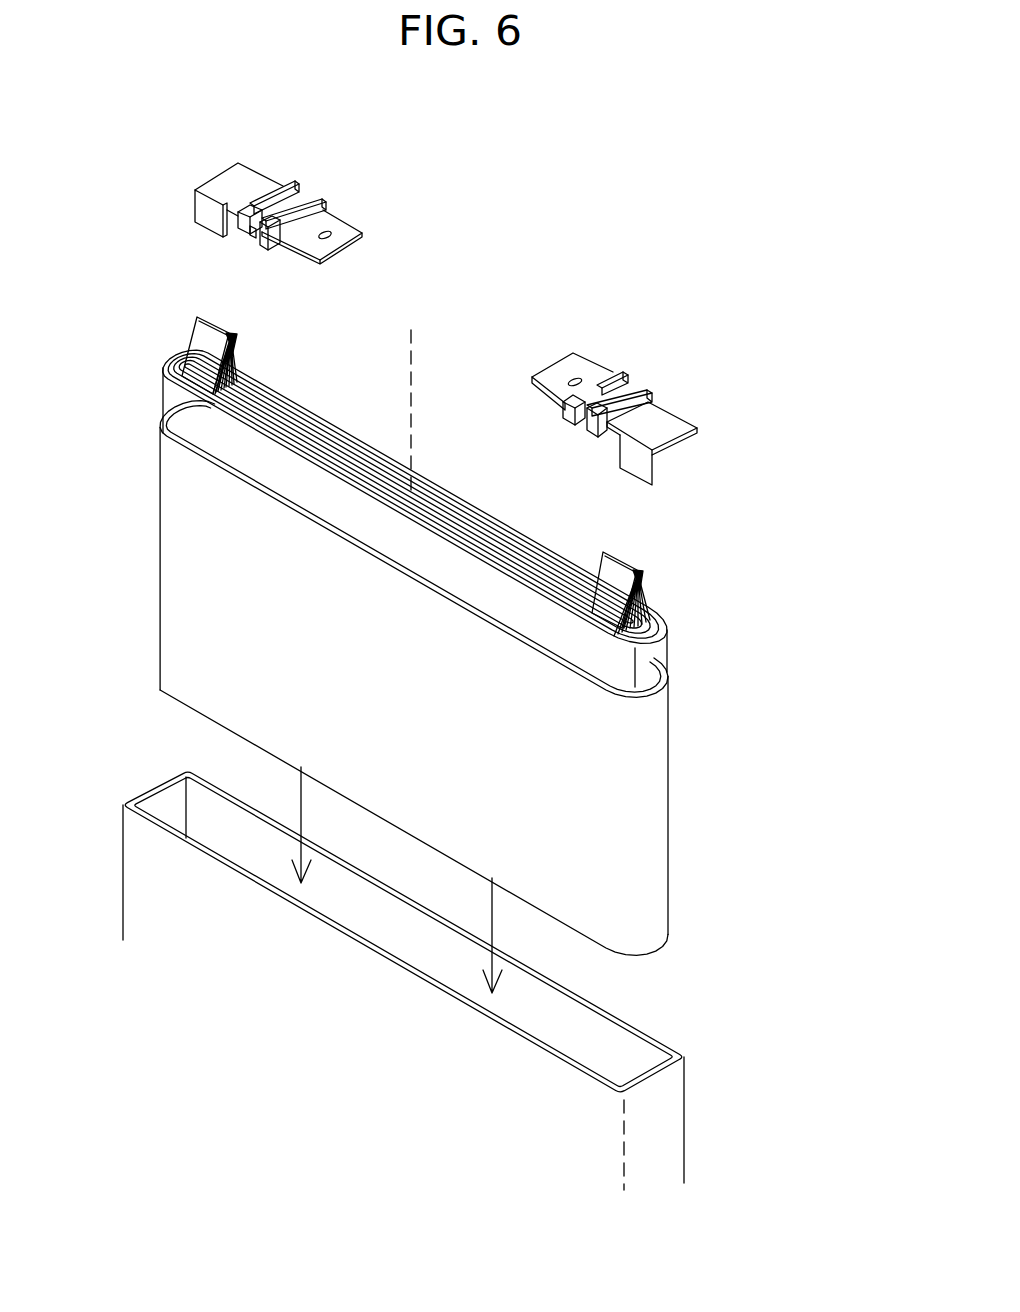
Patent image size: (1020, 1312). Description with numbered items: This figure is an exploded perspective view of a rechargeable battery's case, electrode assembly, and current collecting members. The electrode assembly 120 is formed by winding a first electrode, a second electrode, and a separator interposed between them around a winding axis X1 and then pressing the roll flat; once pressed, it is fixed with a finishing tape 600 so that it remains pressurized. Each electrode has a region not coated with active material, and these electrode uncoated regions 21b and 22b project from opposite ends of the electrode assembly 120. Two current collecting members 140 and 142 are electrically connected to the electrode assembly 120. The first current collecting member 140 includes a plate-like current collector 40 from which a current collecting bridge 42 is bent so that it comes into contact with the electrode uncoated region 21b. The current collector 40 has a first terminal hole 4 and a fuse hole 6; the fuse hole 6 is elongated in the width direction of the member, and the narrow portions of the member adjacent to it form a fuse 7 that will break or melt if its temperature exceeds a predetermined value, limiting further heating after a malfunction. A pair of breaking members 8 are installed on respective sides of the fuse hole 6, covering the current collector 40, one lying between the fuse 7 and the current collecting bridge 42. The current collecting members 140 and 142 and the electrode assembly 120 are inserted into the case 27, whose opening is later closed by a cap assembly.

The first terminal hole 4 is at (333, 239).
The fuse hole 6 is at (263, 197).
The fuse 7 is at (244, 241).
The breaking member 8 is at (292, 186).
The case 27 is at (668, 1143).
The current collector 40 is at (344, 239).
The current collecting bridge 42 is at (200, 212).
The electrode assembly 120 is at (676, 656).
The first current collecting member 140 is at (578, 363).
The current collecting member 142 is at (276, 181).
The finishing tape 600 is at (668, 681).
The electrode uncoated region 21b is at (620, 576).
The electrode uncoated region 22b is at (203, 342).
The winding axis X1 is at (413, 377).